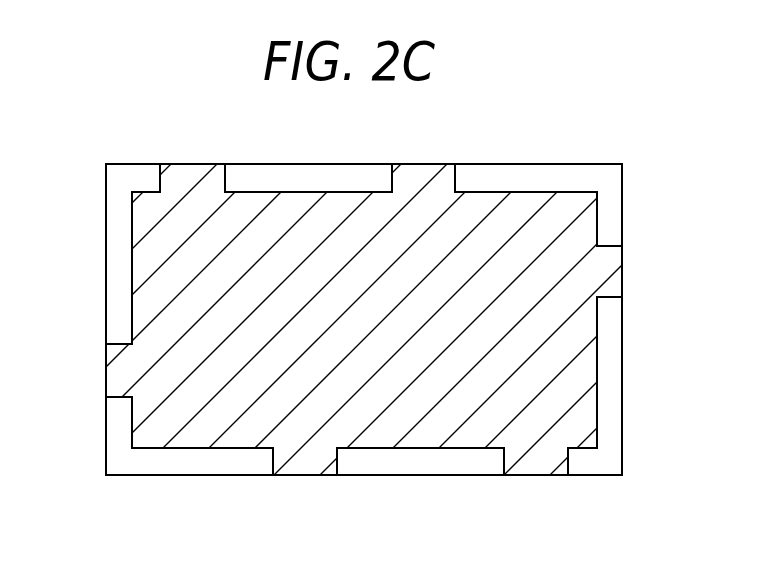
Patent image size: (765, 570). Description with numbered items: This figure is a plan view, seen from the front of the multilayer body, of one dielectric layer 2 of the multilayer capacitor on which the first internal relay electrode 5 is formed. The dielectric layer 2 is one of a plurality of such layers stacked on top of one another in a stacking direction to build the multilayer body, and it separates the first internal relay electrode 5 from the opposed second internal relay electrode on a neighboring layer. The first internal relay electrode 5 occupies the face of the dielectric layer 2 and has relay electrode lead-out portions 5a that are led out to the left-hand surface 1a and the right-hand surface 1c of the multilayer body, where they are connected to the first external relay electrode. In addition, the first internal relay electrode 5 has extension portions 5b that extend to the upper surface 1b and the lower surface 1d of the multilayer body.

The left-hand surface 1a is at (107, 243).
The upper surface 1b is at (253, 166).
The right-hand surface 1c is at (623, 193).
The lower surface 1d is at (583, 477).
The dielectric layer 2 is at (508, 180).
The first internal relay electrode 5 is at (298, 203).
The relay electrode lead-out portion 5a is at (117, 375).
The extension portion 5b is at (428, 178).